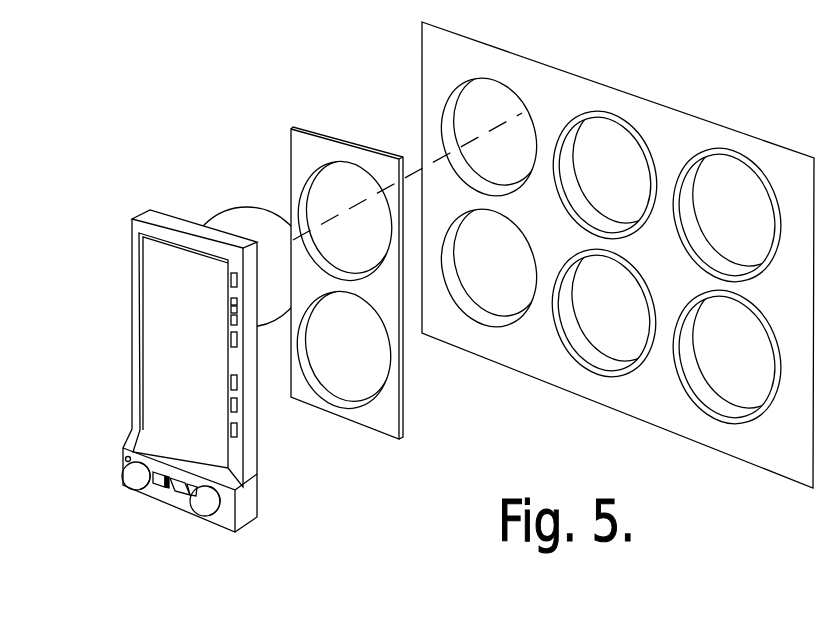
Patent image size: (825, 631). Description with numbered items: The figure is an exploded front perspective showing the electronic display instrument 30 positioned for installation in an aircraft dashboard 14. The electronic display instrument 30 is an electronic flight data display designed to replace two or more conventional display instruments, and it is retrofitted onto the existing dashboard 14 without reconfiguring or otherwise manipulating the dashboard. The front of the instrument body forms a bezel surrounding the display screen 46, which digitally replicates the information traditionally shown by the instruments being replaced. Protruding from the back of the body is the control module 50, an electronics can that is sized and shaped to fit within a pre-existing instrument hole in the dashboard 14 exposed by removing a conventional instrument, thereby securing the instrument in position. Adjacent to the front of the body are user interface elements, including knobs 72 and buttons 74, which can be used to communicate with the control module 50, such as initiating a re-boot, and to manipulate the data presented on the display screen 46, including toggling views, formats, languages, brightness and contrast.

The dashboard 14 is at (665, 120).
The electronic display instrument 30 is at (106, 213).
The display screen 46 is at (167, 340).
The control module 50 is at (225, 220).
The knobs 72 is at (200, 515).
The buttons 74 is at (175, 490).